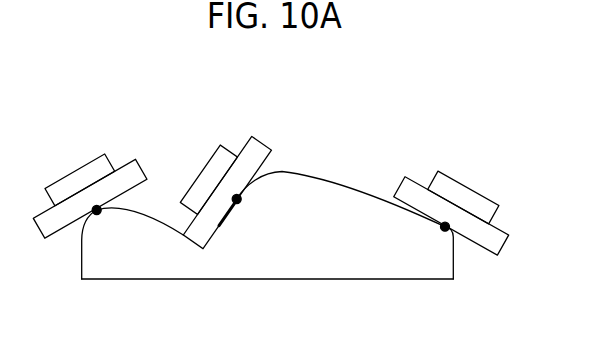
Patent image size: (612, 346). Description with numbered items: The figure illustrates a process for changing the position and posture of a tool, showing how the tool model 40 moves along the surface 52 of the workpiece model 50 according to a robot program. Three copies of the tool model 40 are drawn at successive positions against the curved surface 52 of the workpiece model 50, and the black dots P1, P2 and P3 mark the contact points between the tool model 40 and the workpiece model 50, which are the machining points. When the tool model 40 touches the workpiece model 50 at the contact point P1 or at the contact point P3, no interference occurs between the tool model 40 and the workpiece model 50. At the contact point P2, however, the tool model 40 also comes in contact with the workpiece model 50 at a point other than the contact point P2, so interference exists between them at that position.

The tool model 40 is at (208, 155).
The workpiece model 50 is at (290, 158).
The surface of the workpiece model 52 is at (318, 179).
The contact point P1 is at (97, 211).
The contact point P2 is at (237, 199).
The contact point P3 is at (445, 227).